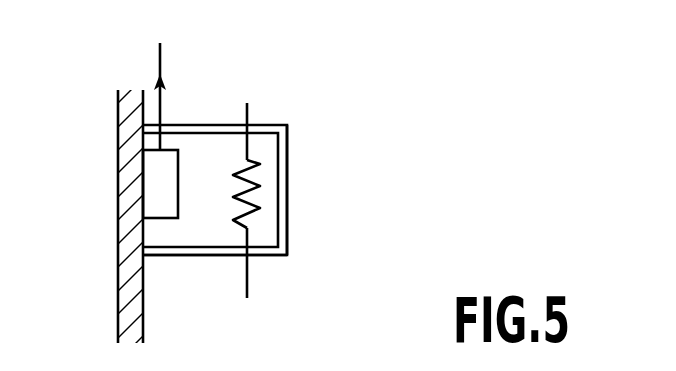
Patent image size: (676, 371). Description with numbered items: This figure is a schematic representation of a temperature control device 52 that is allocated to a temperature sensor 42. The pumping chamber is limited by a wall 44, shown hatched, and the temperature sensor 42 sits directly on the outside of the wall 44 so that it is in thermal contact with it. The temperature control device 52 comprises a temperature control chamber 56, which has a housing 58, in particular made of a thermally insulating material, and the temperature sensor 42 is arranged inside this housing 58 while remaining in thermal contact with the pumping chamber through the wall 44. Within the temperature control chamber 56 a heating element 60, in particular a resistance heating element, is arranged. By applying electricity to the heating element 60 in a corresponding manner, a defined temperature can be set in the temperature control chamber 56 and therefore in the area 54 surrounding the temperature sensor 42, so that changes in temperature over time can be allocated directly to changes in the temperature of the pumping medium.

The temperature sensor 42 is at (150, 193).
The wall 44 is at (132, 268).
The temperature control device 52 is at (277, 120).
The area surrounding the temperature sensor 54 is at (200, 213).
The temperature control chamber 56 is at (288, 192).
The housing 58 is at (198, 122).
The heating element 60 is at (250, 210).